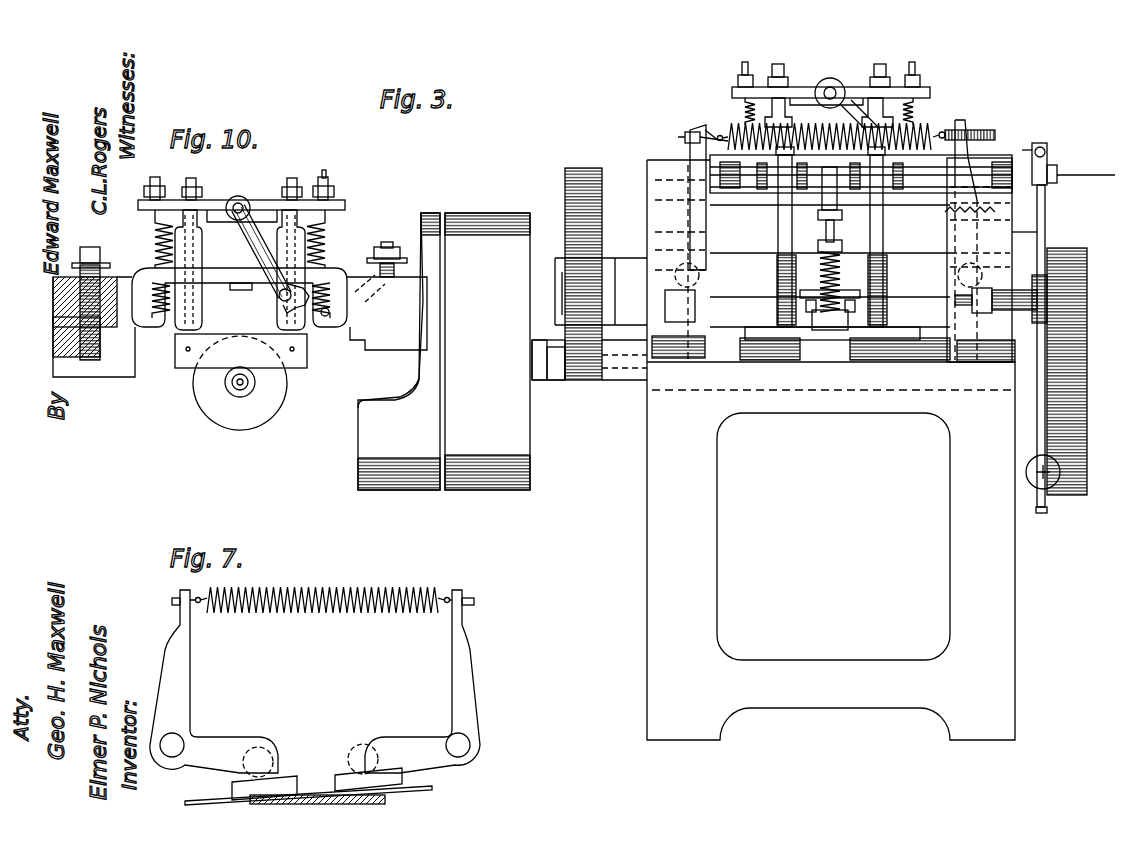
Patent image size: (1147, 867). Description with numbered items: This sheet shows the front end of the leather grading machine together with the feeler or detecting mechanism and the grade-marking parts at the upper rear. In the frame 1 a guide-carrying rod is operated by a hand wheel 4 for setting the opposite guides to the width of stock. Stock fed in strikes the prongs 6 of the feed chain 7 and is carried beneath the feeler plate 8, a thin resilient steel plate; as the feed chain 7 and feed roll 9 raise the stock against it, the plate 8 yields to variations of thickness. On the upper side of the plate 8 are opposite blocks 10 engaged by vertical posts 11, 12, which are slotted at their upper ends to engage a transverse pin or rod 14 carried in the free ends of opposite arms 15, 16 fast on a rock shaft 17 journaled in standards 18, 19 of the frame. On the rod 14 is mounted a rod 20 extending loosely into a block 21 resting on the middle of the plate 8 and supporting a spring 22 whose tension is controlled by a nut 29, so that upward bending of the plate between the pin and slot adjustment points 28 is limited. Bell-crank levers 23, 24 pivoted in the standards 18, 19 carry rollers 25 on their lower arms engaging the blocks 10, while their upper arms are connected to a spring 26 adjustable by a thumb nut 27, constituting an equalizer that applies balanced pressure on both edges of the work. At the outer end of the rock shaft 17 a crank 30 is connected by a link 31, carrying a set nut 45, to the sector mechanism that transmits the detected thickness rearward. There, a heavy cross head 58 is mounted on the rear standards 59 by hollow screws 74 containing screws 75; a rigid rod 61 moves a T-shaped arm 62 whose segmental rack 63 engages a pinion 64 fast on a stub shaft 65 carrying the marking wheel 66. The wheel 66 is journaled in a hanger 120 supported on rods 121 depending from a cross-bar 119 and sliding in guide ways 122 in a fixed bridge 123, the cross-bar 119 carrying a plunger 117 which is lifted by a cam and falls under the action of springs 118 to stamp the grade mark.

In FIG. 3, the frame 1 is at (667, 585).
In FIG. 3, the hand wheel 4 is at (1048, 303).
In FIG. 3, the prongs 6 is at (848, 360).
In FIG. 3, the feed chain 7 is at (829, 352).
In FIG. 7, the feeler plate 8 is at (432, 788).
In FIG. 3, the feeler plate 8 is at (902, 362).
In FIG. 3, the feed roll 9 is at (797, 345).
In FIG. 7, the blocks 10 is at (340, 776).
In FIG. 3, the blocks 10 is at (1020, 345).
In FIG. 3, the vertical post 11 is at (1037, 230).
In FIG. 3, the vertical post 12 is at (778, 215).
In FIG. 3, the transverse pin or rod 14 is at (695, 152).
In FIG. 3, the arm 15 is at (968, 148).
In FIG. 3, the arm 16 is at (735, 146).
In FIG. 3, the rock shaft 17 is at (1093, 176).
In FIG. 3, the standard 18 is at (1050, 163).
In FIG. 3, the standard 19 is at (660, 160).
In FIG. 3, the rod 20 is at (870, 213).
In FIG. 3, the block 21 is at (824, 342).
In FIG. 3, the spring 22 is at (780, 332).
In FIG. 7, the bell-crank lever 23 is at (478, 687).
In FIG. 3, the bell-crank lever 23 is at (1088, 268).
In FIG. 7, the bell-crank lever 24 is at (190, 692).
In FIG. 3, the bell-crank lever 24 is at (660, 218).
In FIG. 7, the rollers 25 is at (272, 745).
In FIG. 3, the rollers 25 is at (886, 305).
In FIG. 7, the spring 26 is at (318, 615).
In FIG. 3, the spring 26 is at (821, 122).
In FIG. 3, the thumb nut 27 is at (992, 132).
In FIG. 3, the pin and slot adjustment 28 is at (787, 332).
In FIG. 3, the nut 29 is at (790, 269).
In FIG. 3, the crank 30 is at (1046, 246).
In FIG. 3, the link 31 is at (1050, 490).
In FIG. 3, the set nut 45 is at (1061, 469).
In FIG. 10, the cross head 58 is at (58, 298).
In FIG. 10, the rear standards 59 is at (390, 310).
In FIG. 10, the rigid rod 61 is at (307, 320).
In FIG. 10, the T-shaped arm 62 is at (246, 198).
In FIG. 3, the T-shaped arm 62 is at (846, 86).
In FIG. 10, the segmental rack 63 is at (302, 312).
In FIG. 3, the segmental rack 63 is at (978, 212).
In FIG. 10, the pinion 64 is at (234, 392).
In FIG. 3, the pinion 64 is at (661, 345).
In FIG. 10, the stub shaft 65 is at (241, 392).
In FIG. 10, the marking wheel 66 is at (268, 408).
In FIG. 3, the marking wheel 66 is at (824, 203).
In FIG. 10, the hollow screw 74 is at (84, 262).
In FIG. 10, the screw 75 is at (97, 262).
In FIG. 10, the plunger 117 is at (240, 287).
In FIG. 10, the springs 118 is at (153, 222).
In FIG. 3, the springs 118 is at (745, 112).
In FIG. 10, the cross-bar 119 is at (346, 204).
In FIG. 3, the cross-bar 119 is at (785, 86).
In FIG. 10, the hanger 120 is at (180, 362).
In FIG. 10, the rods 121 is at (292, 183).
In FIG. 3, the rods 121 is at (773, 93).
In FIG. 10, the guide ways 122 is at (200, 215).
In FIG. 3, the guide ways 122 is at (790, 112).
In FIG. 10, the fixed bridge 123 is at (343, 262).
In FIG. 3, the fixed bridge 123 is at (1023, 150).